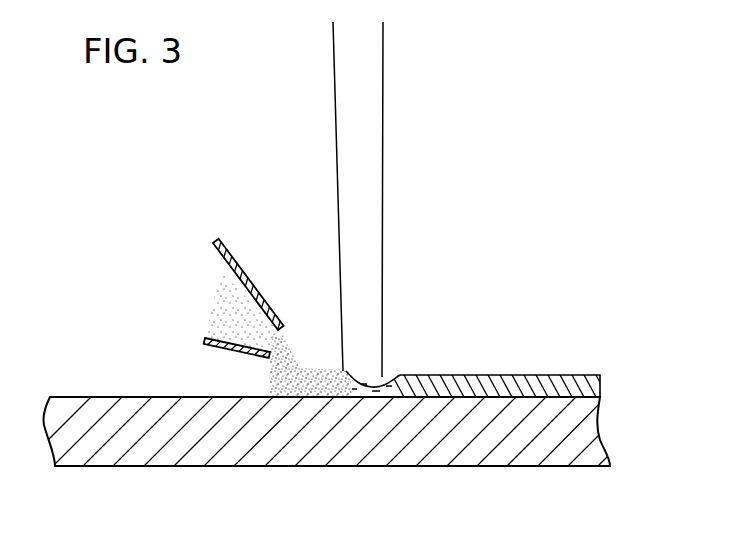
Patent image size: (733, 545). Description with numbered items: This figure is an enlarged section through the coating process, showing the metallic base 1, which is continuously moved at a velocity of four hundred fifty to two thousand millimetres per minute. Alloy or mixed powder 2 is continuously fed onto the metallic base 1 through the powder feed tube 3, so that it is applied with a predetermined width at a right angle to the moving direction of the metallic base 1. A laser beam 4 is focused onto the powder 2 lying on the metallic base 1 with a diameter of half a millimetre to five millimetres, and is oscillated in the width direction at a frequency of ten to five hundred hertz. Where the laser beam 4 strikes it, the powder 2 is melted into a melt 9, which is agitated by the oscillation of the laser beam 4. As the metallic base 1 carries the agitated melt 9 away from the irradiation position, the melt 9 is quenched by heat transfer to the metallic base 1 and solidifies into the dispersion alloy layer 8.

The metallic base 1 is at (593, 427).
The alloy or mixed powder 2 is at (326, 373).
The powder feed tube 3 is at (237, 267).
The laser beam 4 is at (383, 170).
The dispersion alloy layer 8 is at (487, 377).
The melt 9 is at (392, 377).